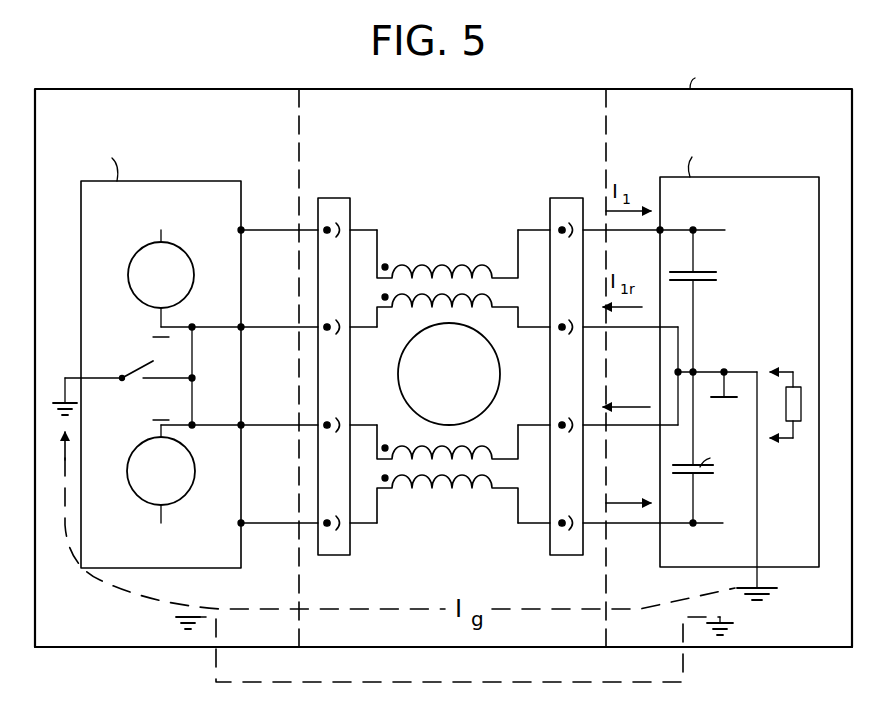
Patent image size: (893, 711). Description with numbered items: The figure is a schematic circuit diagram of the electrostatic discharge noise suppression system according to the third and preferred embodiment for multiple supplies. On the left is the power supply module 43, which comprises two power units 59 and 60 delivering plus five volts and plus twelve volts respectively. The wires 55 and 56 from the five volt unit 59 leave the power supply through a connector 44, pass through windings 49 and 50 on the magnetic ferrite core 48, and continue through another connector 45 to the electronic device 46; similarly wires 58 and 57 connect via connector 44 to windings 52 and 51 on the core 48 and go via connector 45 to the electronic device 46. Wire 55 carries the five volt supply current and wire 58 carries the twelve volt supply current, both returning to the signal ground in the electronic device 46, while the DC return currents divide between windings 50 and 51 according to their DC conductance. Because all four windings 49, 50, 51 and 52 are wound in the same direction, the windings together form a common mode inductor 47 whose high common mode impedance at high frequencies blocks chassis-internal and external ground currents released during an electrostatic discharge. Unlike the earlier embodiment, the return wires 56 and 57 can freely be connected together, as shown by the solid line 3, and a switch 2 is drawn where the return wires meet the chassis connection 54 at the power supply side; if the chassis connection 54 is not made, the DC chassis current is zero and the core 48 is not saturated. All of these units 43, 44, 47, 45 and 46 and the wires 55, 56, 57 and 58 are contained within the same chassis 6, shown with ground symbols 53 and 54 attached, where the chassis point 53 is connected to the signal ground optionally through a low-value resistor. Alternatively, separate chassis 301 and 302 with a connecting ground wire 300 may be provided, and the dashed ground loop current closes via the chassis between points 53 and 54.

The switch 2 is at (150, 377).
The solid line 3 is at (192, 374).
The chassis 6 is at (597, 89).
The power supply module 43 is at (182, 181).
The connector 44 is at (333, 198).
The connector 45 is at (565, 198).
The electronic device 46 is at (785, 177).
The common mode inductor 47 is at (460, 364).
The magnetic ferrite core 48 is at (500, 368).
The winding 49 is at (479, 261).
The winding 50 is at (478, 310).
The winding 51 is at (478, 443).
The winding 52 is at (481, 490).
The chassis point 53 is at (769, 598).
The chassis connection 54 is at (62, 378).
The wire 55 is at (263, 230).
The return wire 56 is at (264, 327).
The return wire 57 is at (264, 425).
The wire 58 is at (264, 523).
The power unit 59 is at (187, 255).
The power unit 60 is at (192, 482).
The connecting ground wire 300 is at (466, 682).
The separate chassis 301 is at (738, 648).
The separate chassis 302 is at (90, 648).